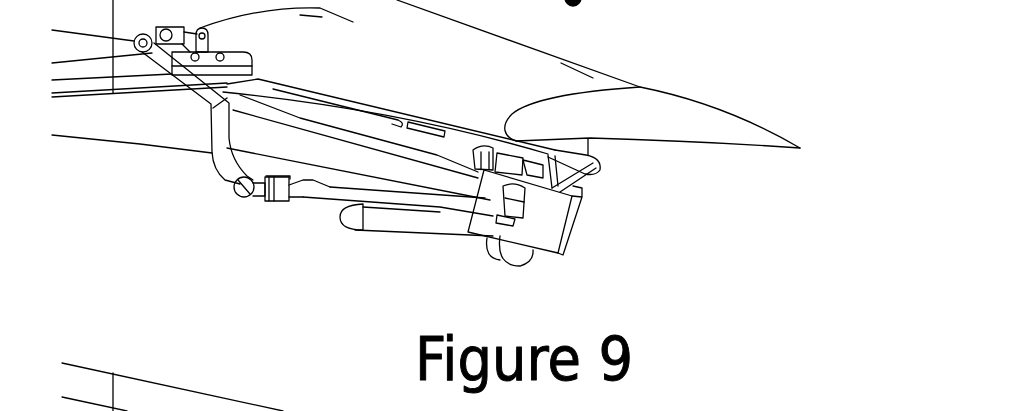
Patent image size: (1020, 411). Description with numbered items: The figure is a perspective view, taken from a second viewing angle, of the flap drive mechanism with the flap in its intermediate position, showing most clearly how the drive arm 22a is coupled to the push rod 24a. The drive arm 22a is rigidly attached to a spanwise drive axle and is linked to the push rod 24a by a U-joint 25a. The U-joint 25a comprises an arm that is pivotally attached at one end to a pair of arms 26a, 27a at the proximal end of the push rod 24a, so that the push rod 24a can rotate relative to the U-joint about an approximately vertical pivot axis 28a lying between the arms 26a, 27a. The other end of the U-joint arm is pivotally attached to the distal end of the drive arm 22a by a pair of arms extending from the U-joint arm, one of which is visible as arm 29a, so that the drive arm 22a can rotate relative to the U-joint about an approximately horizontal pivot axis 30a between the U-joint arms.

The drive arm 22a is at (211, 108).
The push rod 24a is at (390, 192).
The U-joint 25a is at (260, 196).
The arm 26a is at (272, 201).
The arm 27a is at (271, 178).
The vertical pivot axis 28a is at (284, 192).
The arm 29a is at (243, 192).
The horizontal pivot axis 30a is at (245, 194).